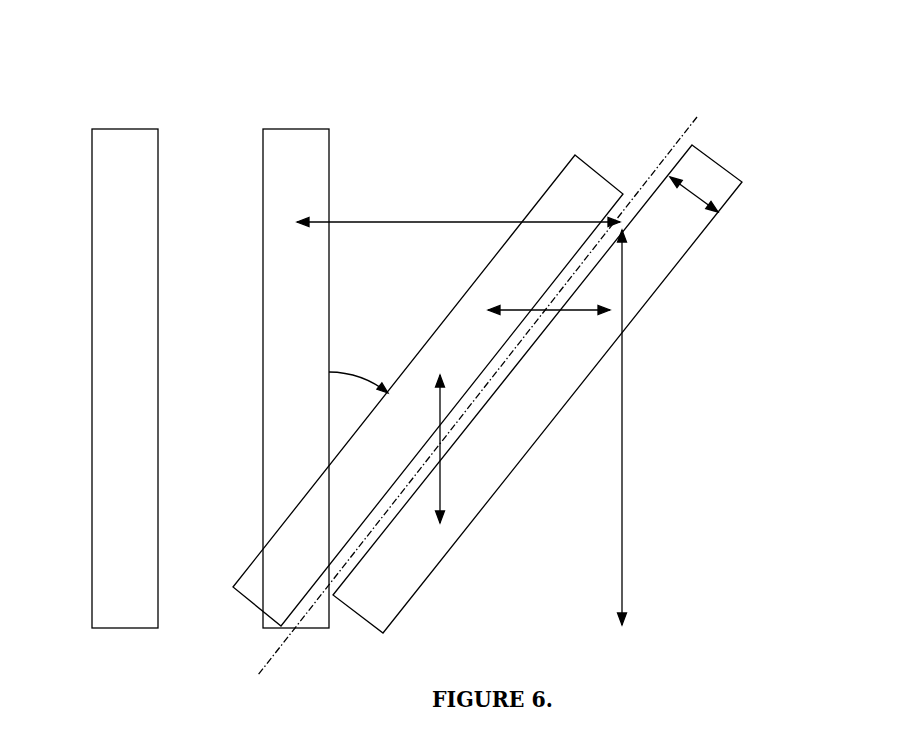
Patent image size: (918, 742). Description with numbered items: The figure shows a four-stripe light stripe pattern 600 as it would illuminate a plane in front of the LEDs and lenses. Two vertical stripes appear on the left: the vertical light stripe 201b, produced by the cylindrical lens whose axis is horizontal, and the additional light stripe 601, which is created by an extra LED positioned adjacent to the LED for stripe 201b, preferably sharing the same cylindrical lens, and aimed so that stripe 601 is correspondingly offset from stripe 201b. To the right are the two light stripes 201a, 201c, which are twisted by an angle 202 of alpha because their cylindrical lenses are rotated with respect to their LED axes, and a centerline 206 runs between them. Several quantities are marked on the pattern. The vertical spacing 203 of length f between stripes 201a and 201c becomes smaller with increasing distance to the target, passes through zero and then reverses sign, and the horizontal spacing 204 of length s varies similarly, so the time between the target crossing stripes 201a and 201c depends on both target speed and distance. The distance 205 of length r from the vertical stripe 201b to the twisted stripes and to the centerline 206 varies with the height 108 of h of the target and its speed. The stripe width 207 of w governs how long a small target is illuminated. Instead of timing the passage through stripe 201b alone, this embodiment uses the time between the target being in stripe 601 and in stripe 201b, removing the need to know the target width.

The four-stripe light stripe pattern 600 is at (652, 84).
The additional light stripe 601 is at (128, 131).
The vertical light stripe 201b is at (263, 187).
The twisted light stripe 201a is at (538, 197).
The twisted light stripe 201c is at (700, 243).
The centerline 206 is at (697, 117).
The distance r 205 is at (462, 222).
The horizontal spacing s 204 is at (522, 308).
The twist angle alpha 202 is at (369, 348).
The vertical spacing f 203 is at (443, 483).
The stripe width w 207 is at (697, 187).
The height h 108 is at (622, 367).